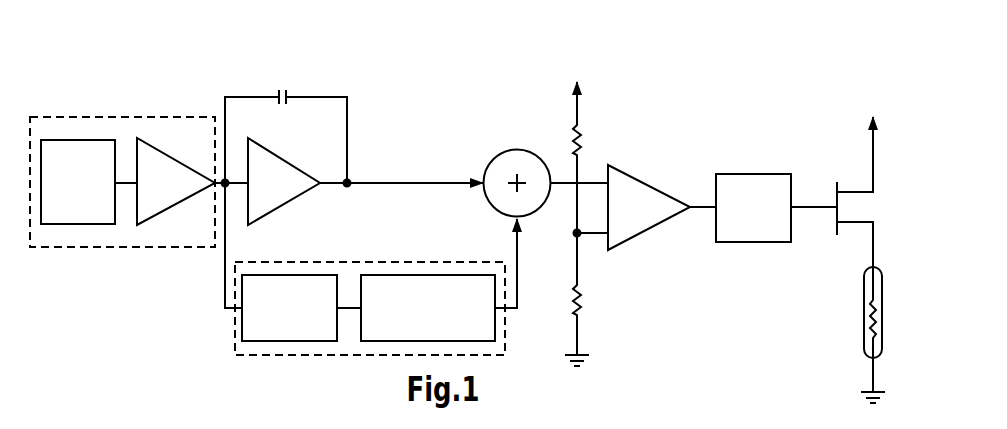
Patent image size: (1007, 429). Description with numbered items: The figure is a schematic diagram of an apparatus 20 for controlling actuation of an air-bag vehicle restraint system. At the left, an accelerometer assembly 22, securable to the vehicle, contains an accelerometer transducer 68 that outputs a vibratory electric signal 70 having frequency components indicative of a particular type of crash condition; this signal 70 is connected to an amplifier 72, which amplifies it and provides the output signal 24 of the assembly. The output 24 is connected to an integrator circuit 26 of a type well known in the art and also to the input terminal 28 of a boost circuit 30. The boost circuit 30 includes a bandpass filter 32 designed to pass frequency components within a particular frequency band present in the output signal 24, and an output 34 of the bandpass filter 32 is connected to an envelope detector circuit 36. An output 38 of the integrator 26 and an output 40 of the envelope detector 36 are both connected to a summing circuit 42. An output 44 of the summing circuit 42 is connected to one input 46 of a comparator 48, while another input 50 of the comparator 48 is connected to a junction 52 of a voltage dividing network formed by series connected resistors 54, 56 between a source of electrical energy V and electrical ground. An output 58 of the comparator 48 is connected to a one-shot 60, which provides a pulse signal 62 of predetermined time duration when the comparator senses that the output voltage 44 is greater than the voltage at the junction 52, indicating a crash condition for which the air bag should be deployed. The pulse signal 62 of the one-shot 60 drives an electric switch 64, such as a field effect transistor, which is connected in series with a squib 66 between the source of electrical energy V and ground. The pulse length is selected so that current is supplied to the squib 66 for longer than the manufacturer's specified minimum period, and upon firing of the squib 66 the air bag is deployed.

The apparatus 20 is at (685, 53).
The accelerometer assembly 22 is at (89, 117).
The output 24 is at (225, 183).
The integrator circuit 26 is at (313, 80).
The input terminal 28 is at (237, 311).
The boost circuit 30 is at (233, 355).
The bandpass filter 32 is at (262, 282).
The output 34 is at (348, 305).
The envelope detector circuit 36 is at (412, 277).
The output 38 is at (348, 181).
The output 40 is at (513, 308).
The summing circuit 42 is at (500, 172).
The output 44 is at (563, 180).
The input 46 is at (608, 180).
The comparator 48 is at (640, 205).
The input 50 is at (606, 243).
The junction 52 is at (573, 240).
The resistor 54 is at (577, 137).
The resistor 56 is at (583, 300).
The output 58 is at (704, 213).
The one-shot 60 is at (752, 174).
The pulse signal 62 is at (818, 207).
The electric switch 64 is at (853, 208).
The squib 66 is at (867, 340).
The accelerometer transducer 68 is at (81, 218).
The vibratory electric signal 70 is at (126, 172).
The amplifier 72 is at (160, 160).